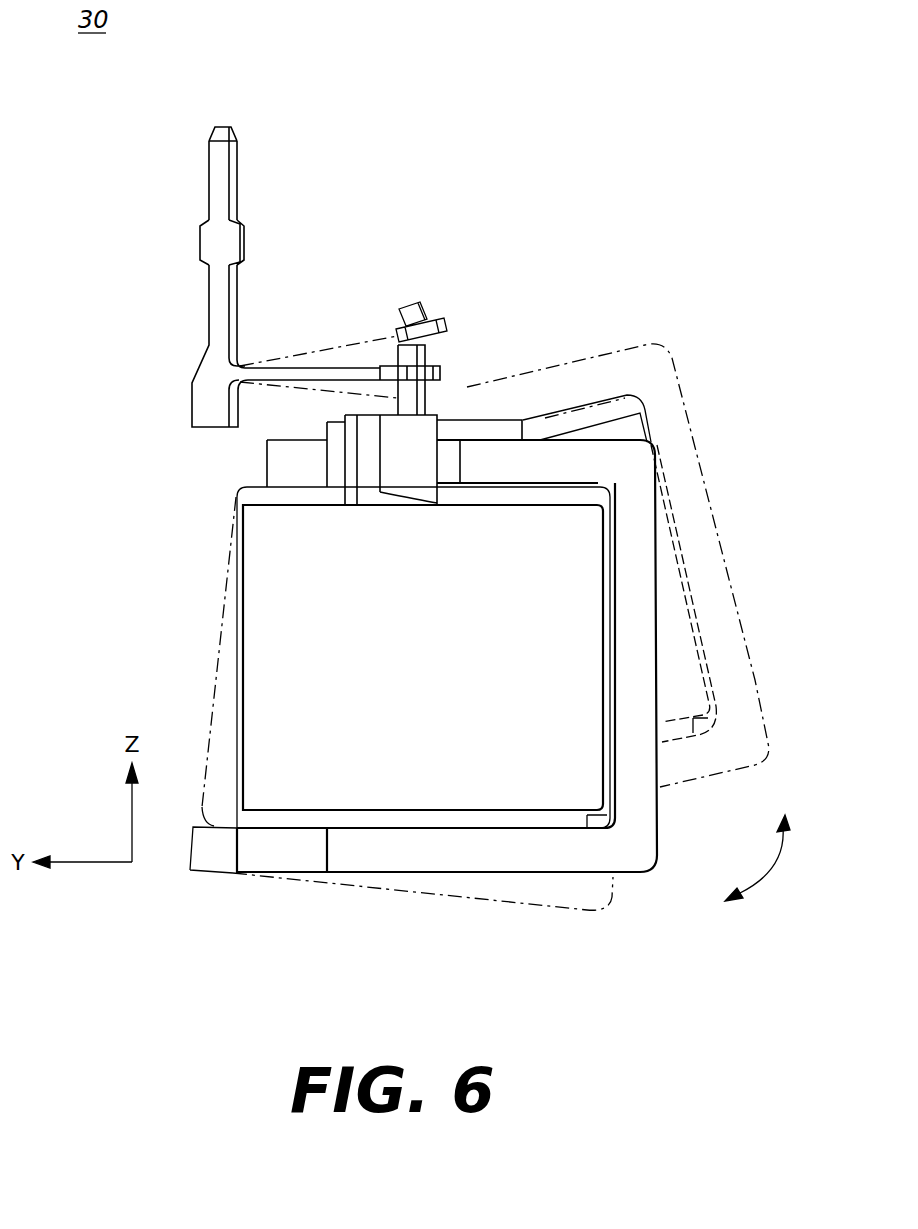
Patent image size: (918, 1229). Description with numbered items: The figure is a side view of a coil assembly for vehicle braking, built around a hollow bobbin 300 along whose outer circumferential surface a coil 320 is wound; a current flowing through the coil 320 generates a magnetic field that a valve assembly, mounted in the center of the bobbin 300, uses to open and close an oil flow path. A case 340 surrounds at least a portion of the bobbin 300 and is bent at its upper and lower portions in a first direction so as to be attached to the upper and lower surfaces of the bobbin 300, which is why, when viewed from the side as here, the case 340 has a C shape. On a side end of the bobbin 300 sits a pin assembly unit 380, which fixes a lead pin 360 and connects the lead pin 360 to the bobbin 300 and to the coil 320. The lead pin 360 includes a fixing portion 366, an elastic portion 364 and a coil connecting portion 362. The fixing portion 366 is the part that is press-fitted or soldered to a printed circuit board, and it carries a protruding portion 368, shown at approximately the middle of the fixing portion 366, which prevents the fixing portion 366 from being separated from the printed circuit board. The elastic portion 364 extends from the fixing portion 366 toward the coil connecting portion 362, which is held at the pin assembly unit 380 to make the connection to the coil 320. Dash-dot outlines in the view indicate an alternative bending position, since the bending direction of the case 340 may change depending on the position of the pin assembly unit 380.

The bobbin 300 is at (237, 492).
The coil 320 is at (246, 612).
The case 340 is at (657, 812).
The lead pin 360 is at (447, 207).
The coil connecting portion 362 is at (397, 342).
The elastic portion 364 is at (292, 376).
The fixing portion 366 is at (236, 290).
The protruding portion 368 is at (242, 244).
The pin assembly unit 380 is at (437, 416).